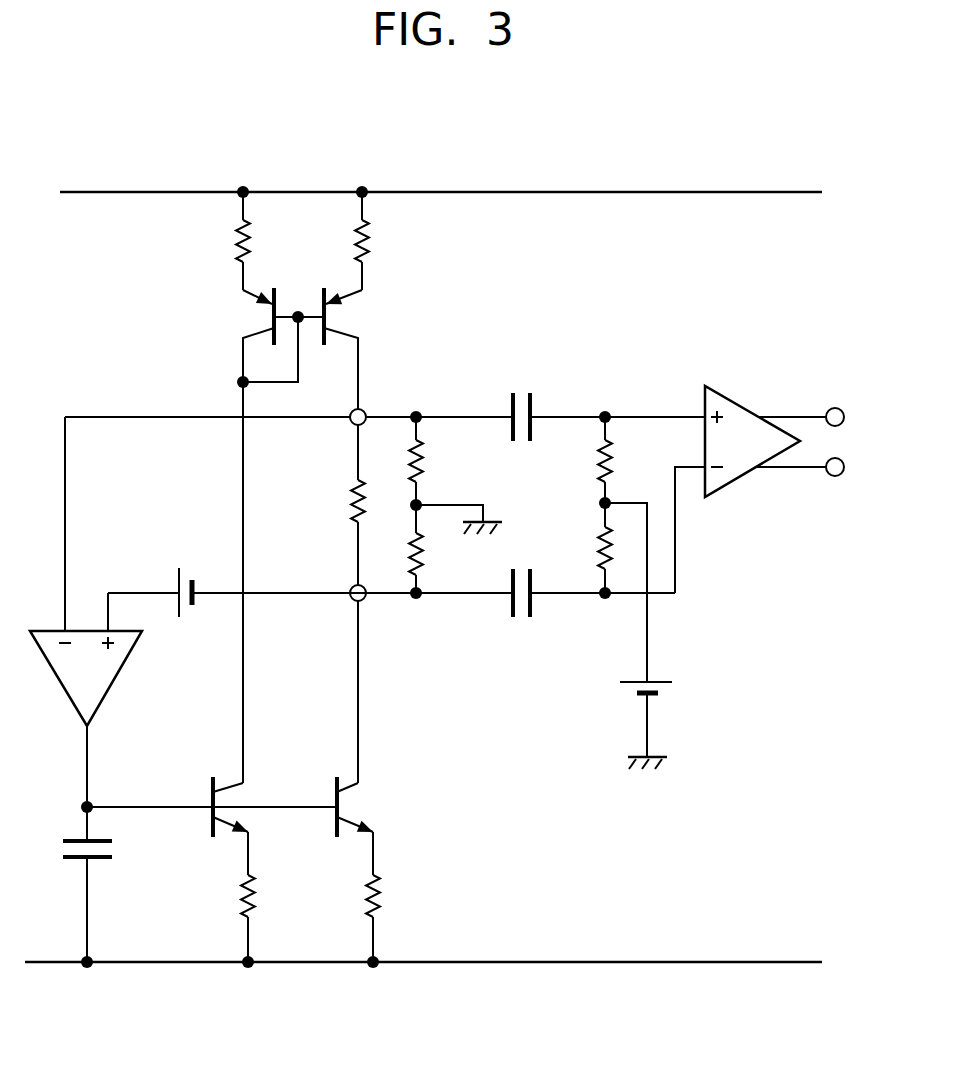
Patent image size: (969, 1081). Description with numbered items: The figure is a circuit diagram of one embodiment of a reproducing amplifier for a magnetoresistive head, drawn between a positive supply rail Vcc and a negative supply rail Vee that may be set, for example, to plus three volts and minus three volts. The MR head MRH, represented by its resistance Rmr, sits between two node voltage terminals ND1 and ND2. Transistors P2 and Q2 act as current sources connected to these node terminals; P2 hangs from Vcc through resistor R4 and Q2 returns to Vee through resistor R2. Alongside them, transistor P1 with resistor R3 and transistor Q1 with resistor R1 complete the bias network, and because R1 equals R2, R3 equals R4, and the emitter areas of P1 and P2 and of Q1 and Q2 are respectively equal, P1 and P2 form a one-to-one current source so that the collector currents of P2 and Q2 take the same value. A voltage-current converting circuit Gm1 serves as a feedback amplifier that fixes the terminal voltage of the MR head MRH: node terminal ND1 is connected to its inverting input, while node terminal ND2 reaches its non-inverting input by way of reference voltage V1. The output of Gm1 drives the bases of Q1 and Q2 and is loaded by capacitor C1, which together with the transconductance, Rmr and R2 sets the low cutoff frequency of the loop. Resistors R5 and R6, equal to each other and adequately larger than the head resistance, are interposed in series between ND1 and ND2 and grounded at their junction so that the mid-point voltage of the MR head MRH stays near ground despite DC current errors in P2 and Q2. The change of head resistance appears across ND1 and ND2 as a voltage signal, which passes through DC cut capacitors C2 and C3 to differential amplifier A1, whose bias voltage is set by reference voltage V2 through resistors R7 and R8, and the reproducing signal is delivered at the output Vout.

The power source voltage Vcc is at (441, 176).
The power source voltage Vee is at (423, 946).
The resistor R1 is at (229, 897).
The resistor R2 is at (352, 897).
The resistor R3 is at (223, 241).
The resistor R4 is at (383, 241).
The resistor R5 is at (436, 461).
The resistor R6 is at (397, 549).
The resistor R7 is at (584, 460).
The resistor R8 is at (584, 548).
The resistance of the MR head Rmr is at (290, 450).
The MR head MRH is at (313, 503).
The transistor P1 is at (240, 335).
The transistor P2 is at (360, 348).
The transistor Q1 is at (207, 810).
The transistor Q2 is at (332, 810).
The node voltage terminal ND1 is at (383, 400).
The node voltage terminal ND2 is at (331, 609).
The capacitor C1 is at (67, 900).
The DC cut capacitor C2 is at (520, 399).
The DC cut capacitor C3 is at (520, 612).
The reference voltage V1 is at (175, 610).
The reference voltage V2 is at (655, 636).
The differential amplifier A1 is at (752, 441).
The voltage-current converting circuit Gm1 is at (86, 571).
The reproducing signal output Vout is at (830, 442).